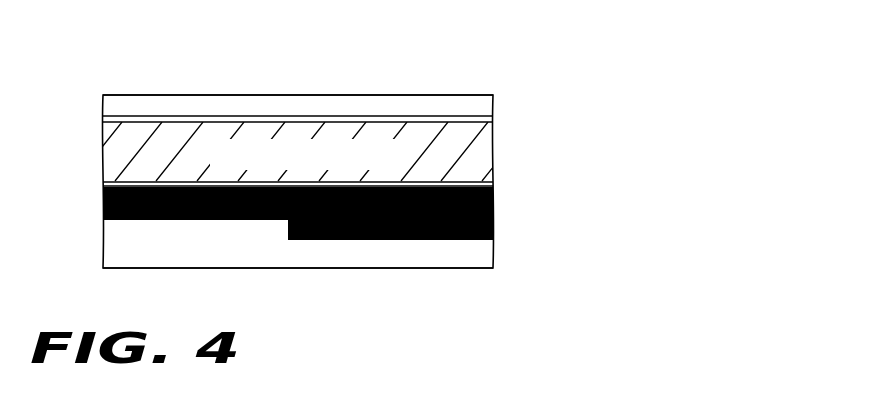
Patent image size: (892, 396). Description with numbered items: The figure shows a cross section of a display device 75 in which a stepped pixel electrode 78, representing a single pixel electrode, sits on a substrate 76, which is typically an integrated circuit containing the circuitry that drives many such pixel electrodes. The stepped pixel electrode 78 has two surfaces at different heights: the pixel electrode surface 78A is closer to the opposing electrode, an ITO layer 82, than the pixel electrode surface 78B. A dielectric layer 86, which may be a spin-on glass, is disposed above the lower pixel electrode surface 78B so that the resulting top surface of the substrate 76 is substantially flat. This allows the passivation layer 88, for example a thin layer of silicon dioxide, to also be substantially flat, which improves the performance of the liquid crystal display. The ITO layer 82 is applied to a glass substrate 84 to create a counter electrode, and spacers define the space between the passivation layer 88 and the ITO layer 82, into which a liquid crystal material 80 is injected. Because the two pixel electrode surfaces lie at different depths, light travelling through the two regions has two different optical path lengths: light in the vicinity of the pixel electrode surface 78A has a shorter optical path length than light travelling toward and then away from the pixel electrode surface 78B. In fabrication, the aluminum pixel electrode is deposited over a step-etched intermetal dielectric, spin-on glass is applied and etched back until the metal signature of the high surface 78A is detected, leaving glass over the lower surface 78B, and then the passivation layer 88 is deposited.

The display device 75 is at (513, 58).
The substrate 76 is at (105, 251).
The stepped pixel electrode 78 is at (350, 170).
The pixel electrode surface 78A is at (182, 190).
The pixel electrode surface 78B is at (432, 195).
The liquid crystal material 80 is at (105, 141).
The ITO layer 82 is at (496, 119).
The glass substrate 84 is at (311, 98).
The dielectric layer 86 is at (718, 184).
The passivation layer 88 is at (112, 184).